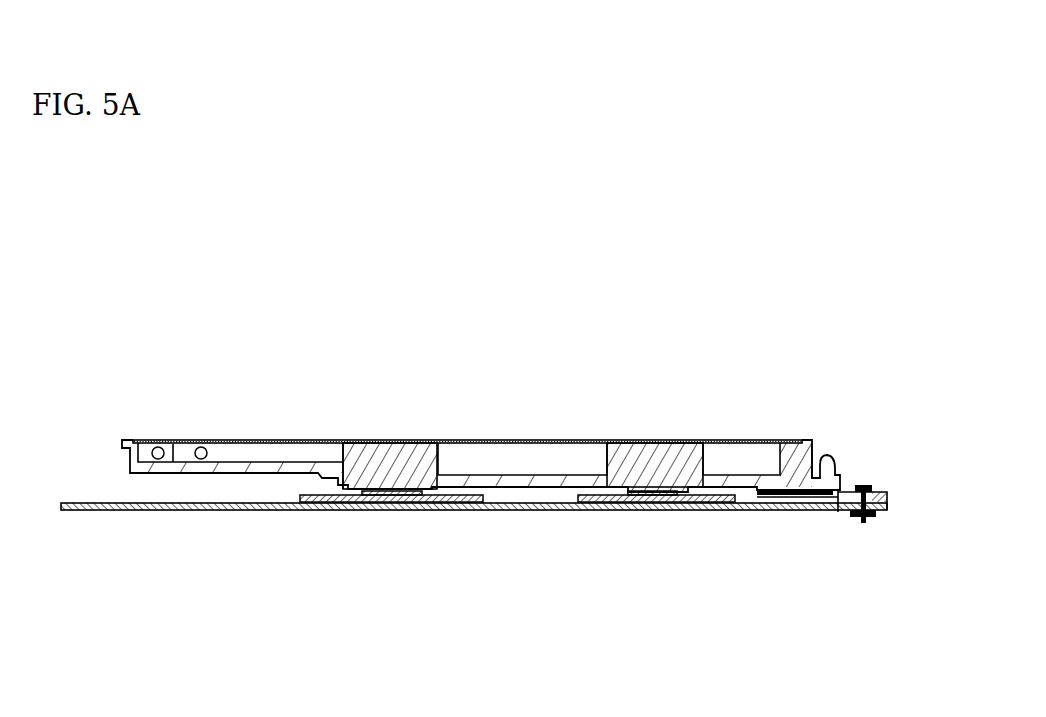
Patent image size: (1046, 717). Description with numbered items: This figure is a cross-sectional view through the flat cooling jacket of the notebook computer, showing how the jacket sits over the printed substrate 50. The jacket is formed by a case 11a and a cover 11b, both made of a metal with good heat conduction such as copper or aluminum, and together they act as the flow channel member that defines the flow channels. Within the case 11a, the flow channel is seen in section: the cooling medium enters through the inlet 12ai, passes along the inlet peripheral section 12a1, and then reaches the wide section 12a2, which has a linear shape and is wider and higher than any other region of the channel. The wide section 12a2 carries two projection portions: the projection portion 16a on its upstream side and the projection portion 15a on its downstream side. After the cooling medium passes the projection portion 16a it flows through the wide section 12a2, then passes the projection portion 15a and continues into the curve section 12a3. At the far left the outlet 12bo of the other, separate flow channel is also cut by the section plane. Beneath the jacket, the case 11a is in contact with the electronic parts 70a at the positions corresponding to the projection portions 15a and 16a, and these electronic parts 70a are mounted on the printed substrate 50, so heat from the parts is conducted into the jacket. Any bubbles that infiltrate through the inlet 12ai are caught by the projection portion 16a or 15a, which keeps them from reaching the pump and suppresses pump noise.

The outlet 12bo is at (151, 447).
The inlet 12ai is at (196, 450).
The inlet peripheral section 12a1 is at (297, 443).
The projection portion 16a is at (389, 455).
The wide section 12a2 is at (533, 470).
The projection portion 15a is at (665, 470).
The curve section 12a3 is at (735, 470).
The cover 11b is at (762, 489).
The case 11a is at (799, 445).
The electronic parts 70a is at (392, 500).
The printed substrate 50 is at (573, 507).